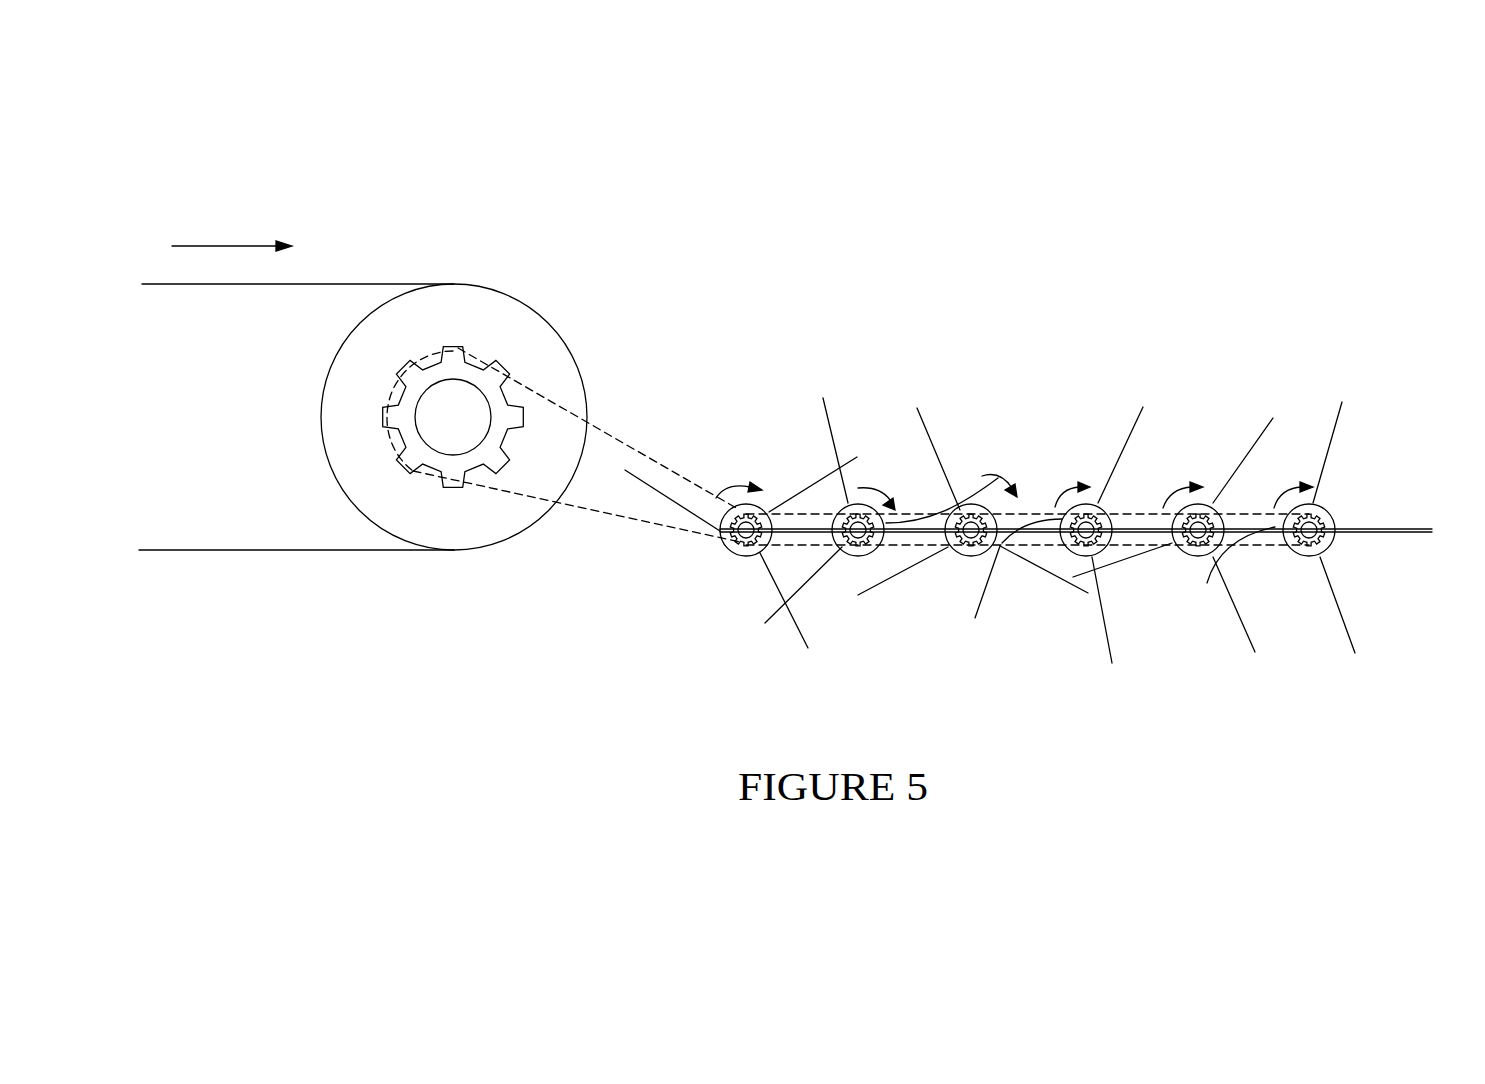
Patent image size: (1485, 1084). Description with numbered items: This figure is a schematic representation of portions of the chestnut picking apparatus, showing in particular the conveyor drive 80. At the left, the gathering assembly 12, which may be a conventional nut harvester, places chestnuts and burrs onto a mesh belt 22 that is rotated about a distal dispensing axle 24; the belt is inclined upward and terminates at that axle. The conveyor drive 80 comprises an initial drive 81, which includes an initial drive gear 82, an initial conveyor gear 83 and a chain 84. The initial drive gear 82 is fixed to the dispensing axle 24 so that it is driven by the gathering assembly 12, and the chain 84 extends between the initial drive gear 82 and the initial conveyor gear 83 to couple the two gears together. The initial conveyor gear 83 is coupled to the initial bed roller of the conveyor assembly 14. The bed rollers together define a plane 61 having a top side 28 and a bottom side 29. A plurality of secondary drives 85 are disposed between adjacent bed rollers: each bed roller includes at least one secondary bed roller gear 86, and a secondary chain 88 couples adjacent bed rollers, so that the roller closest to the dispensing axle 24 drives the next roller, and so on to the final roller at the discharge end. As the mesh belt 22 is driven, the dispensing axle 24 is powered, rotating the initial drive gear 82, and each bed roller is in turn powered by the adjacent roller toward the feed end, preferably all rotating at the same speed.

The gathering assembly 12 is at (353, 262).
The dispensing axle 24 is at (517, 302).
The mesh belt 22 is at (204, 549).
The initial drive gear 82 is at (443, 477).
The initial drive 81 is at (623, 412).
The chain 84 is at (602, 514).
The conveyor drive 80 is at (667, 440).
The plane 61 is at (1404, 527).
The conveyor assembly 14 is at (1019, 380).
The initial conveyor gear 83 is at (742, 558).
The secondary bed roller gear 86 is at (1100, 510).
The secondary drive 85 is at (1035, 490).
The secondary chain 88 is at (1033, 547).
The top side 28 is at (1198, 428).
The bottom side 29 is at (1160, 603).